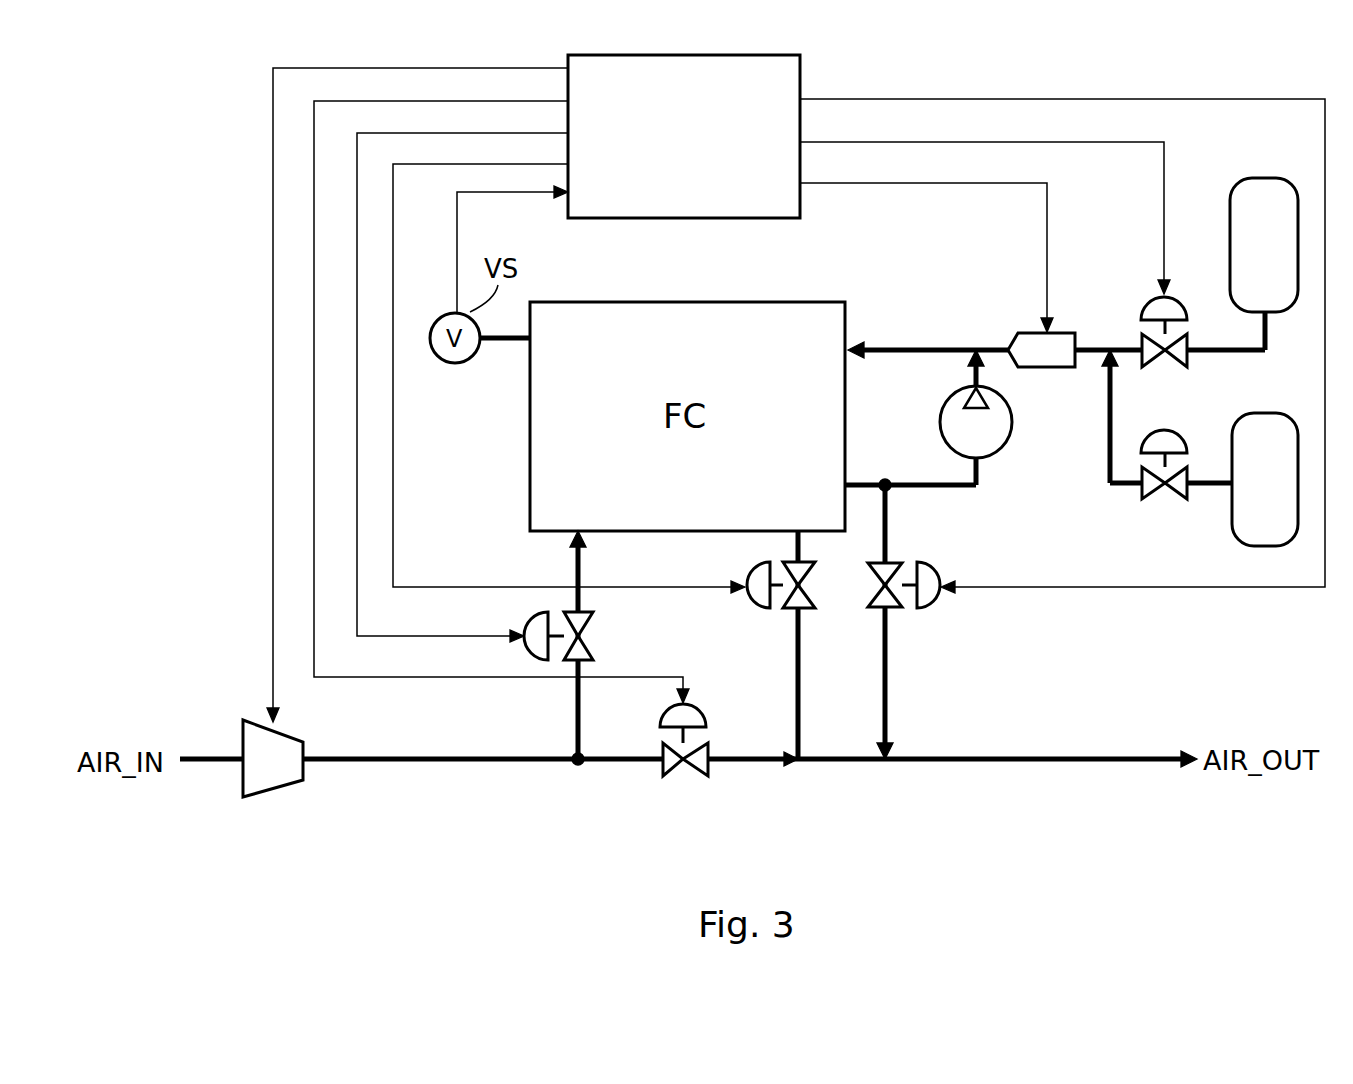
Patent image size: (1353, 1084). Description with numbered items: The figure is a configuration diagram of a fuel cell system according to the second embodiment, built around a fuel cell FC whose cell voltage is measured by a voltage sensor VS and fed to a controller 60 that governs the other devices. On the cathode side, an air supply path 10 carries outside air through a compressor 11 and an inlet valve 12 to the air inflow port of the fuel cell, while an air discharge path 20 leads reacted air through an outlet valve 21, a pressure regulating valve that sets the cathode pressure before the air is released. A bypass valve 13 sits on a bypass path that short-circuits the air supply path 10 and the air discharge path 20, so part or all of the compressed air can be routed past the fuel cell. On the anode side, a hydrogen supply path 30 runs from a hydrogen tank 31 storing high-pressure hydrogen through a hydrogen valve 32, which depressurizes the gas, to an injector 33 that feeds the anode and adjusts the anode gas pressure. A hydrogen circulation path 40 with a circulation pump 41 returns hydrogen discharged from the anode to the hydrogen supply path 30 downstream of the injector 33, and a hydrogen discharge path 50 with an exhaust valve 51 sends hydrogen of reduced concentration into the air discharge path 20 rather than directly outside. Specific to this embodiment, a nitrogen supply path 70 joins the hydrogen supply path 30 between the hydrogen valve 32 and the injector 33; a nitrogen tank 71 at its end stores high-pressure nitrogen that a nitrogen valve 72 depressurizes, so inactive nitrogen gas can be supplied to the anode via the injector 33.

The air supply path 10 is at (448, 762).
The compressor 11 is at (305, 747).
The inlet valve 12 is at (524, 630).
The bypass valve 13 is at (705, 722).
The air discharge path 20 is at (1025, 757).
The outlet valve 21 is at (745, 600).
The hydrogen supply path 30 is at (900, 340).
The hydrogen tank 31 is at (1252, 180).
The hydrogen valve 32 is at (1178, 297).
The injector 33 is at (1068, 333).
The hydrogen circulation path 40 is at (912, 480).
The circulation pump 41 is at (1010, 443).
The hydrogen discharge path 50 is at (888, 652).
The exhaust valve 51 is at (940, 607).
The controller 60 is at (802, 77).
The nitrogen supply path 70 is at (1125, 490).
The nitrogen tank 71 is at (1232, 535).
The nitrogen valve 72 is at (1186, 440).